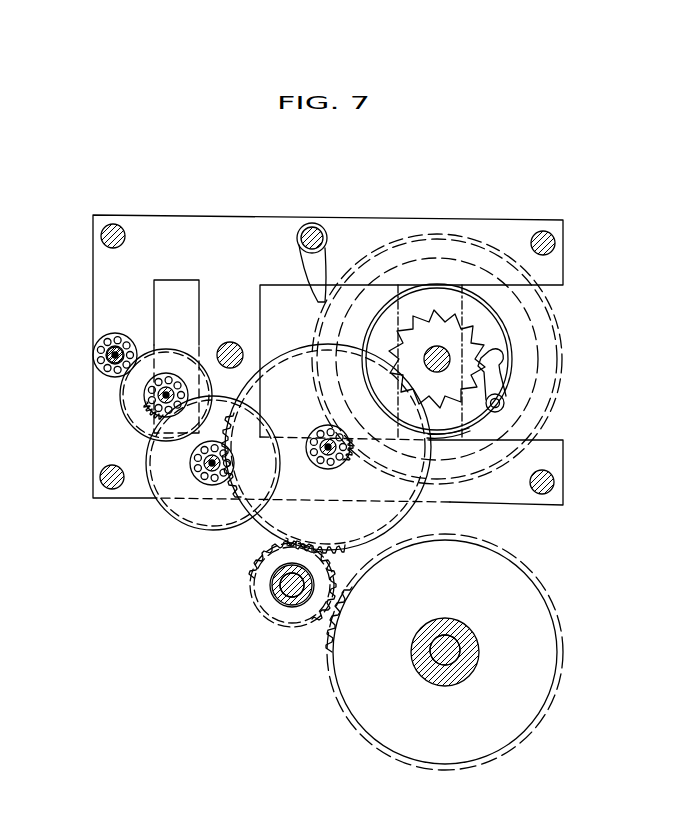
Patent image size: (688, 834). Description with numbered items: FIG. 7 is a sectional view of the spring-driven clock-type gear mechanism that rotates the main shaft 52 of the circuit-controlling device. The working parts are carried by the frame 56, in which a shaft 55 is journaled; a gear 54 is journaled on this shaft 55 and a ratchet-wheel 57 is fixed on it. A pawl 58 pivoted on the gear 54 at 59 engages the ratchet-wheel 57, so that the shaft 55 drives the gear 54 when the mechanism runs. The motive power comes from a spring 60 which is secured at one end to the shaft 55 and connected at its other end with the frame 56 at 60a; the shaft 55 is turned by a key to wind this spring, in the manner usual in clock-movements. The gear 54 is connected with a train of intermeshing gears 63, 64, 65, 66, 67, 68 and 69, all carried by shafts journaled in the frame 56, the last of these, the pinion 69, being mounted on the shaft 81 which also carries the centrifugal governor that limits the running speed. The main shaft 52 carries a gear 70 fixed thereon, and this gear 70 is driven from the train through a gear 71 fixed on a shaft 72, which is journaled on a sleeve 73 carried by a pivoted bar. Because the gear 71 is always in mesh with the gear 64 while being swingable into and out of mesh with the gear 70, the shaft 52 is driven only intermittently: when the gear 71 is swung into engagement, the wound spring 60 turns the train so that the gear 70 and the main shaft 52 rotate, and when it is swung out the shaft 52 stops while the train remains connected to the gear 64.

The main shaft 52 is at (455, 663).
The gear 54 is at (551, 369).
The shaft 55 is at (450, 358).
The frame 56 is at (553, 268).
The ratchet-wheel 57 is at (473, 337).
The pawl 58 is at (500, 378).
The pivot 59 is at (505, 405).
The spring 60 is at (345, 303).
The spring connection to frame 60a is at (318, 234).
The gear 63 is at (350, 460).
The gear 64 is at (277, 520).
The gear 65 is at (205, 478).
The gear 66 is at (160, 507).
The gear 67 is at (150, 400).
The gear 68 is at (124, 392).
The pinion 69 is at (113, 340).
The gear 70 is at (530, 600).
The gear 71 is at (295, 615).
The shaft 72 is at (282, 586).
The sleeve 73 is at (277, 603).
The shaft 81 is at (100, 363).